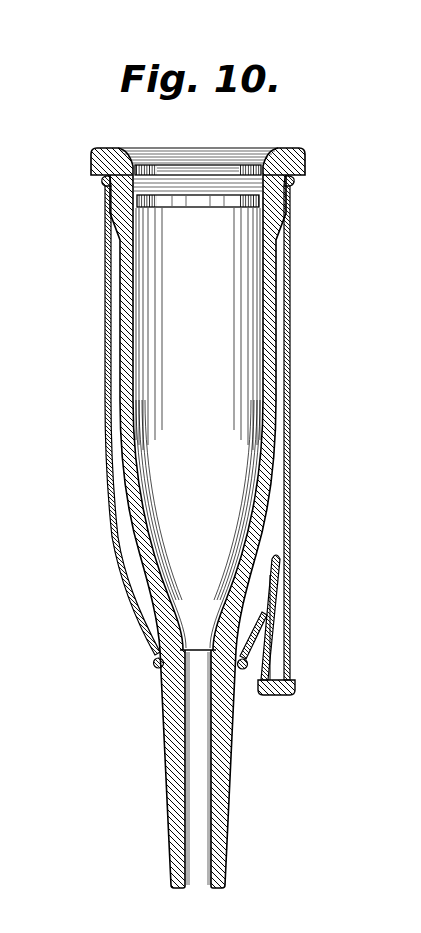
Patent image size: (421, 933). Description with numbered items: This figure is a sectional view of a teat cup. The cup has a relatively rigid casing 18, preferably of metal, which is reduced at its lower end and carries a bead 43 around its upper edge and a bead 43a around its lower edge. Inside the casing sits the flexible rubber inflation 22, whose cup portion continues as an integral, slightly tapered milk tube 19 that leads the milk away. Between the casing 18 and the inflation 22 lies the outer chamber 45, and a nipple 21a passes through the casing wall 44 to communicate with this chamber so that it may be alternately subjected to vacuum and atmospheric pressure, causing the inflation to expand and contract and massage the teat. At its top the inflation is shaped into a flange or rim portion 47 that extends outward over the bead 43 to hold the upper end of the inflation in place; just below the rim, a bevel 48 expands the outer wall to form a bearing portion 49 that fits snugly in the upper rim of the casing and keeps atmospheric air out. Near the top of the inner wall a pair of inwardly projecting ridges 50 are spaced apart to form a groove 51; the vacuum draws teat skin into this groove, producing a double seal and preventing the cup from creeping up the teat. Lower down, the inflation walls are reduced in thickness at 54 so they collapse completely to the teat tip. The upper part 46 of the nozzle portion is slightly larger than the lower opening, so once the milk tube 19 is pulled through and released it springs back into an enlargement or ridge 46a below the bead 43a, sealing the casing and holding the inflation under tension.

The casing 18 is at (292, 381).
The milk tube 19 is at (237, 776).
The nipple 21a is at (295, 677).
The inflation 22 is at (265, 510).
The bead 43 is at (102, 180).
The bead 43a is at (156, 666).
The casing wall 44 is at (281, 556).
The outer chamber 45 is at (118, 572).
The upper part of nozzle portion 46 is at (158, 684).
The ridge 46a is at (244, 677).
The flange or rim portion 47 is at (303, 163).
The bevel 48 is at (118, 215).
The bearing portion 49 is at (290, 198).
The ridges 50 is at (147, 170).
The groove 51 is at (242, 174).
The reduced-thickness wall portion 54 is at (152, 585).